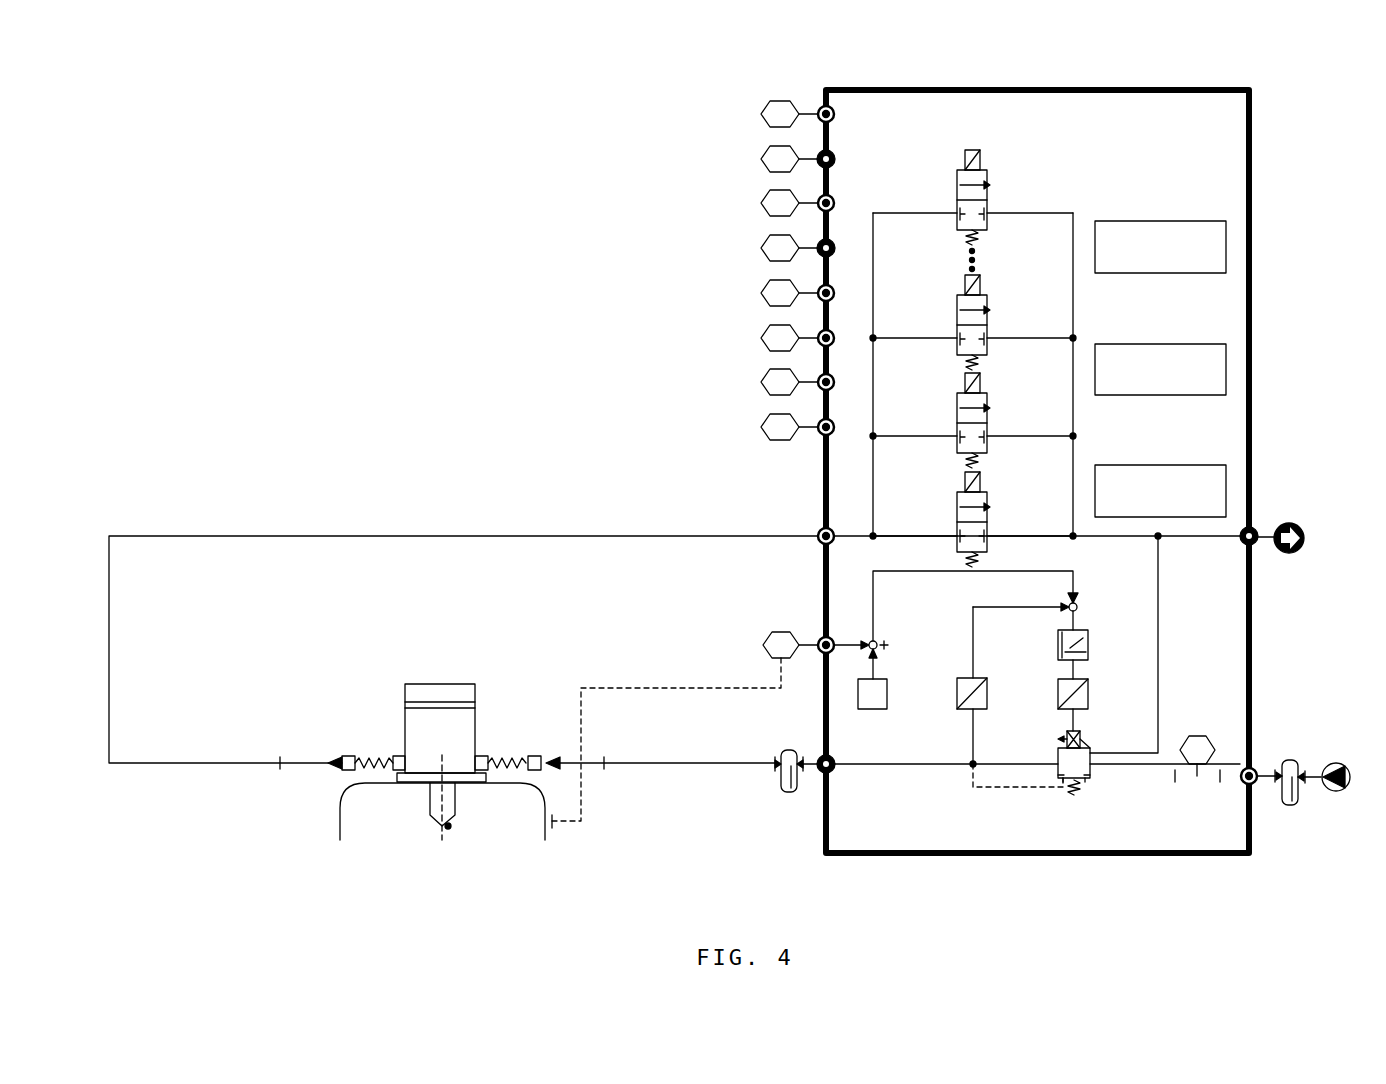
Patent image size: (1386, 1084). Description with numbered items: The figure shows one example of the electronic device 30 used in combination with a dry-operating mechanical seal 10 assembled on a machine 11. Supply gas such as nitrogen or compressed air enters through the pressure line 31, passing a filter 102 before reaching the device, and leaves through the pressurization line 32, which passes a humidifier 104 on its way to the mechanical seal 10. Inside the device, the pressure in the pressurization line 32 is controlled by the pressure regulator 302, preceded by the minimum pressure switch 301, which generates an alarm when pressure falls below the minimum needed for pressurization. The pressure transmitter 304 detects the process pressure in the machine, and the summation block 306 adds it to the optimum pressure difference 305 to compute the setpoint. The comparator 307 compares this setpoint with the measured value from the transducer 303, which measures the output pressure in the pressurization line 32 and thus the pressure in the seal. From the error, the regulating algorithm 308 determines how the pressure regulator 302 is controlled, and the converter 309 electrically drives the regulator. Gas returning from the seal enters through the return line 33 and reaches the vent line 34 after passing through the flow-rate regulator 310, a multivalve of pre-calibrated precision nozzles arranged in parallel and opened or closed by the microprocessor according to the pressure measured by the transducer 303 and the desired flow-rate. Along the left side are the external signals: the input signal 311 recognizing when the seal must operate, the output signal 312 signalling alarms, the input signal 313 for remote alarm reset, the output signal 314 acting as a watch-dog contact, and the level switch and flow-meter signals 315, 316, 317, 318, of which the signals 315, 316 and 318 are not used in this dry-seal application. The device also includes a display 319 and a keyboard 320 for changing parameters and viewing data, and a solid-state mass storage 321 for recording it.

The dry-operating mechanical seal 10 is at (408, 678).
The machine 11 is at (342, 851).
The electronic device 30 is at (828, 866).
The pressure line 31 is at (1305, 759).
The pressurization line 32 is at (604, 775).
The return line 33 is at (110, 771).
The vent line 34 is at (1260, 522).
The filter 102 is at (1305, 759).
The humidifier 104 is at (803, 752).
The minimum pressure switch 301 is at (1220, 729).
The pressure regulator 302 is at (1090, 794).
The transducer 303 is at (991, 672).
The pressure transmitter 304 is at (758, 625).
The optimum pressure difference 305 is at (891, 672).
The summation block 306 is at (891, 623).
The comparator 307 is at (1092, 587).
The regulating algorithm 308 is at (1092, 630).
The converter 309 is at (1092, 674).
The flow-rate regulator 310 is at (873, 146).
The input signal 311 is at (758, 94).
The output signal 312 is at (758, 139).
The input signal 313 is at (758, 183).
The output signal 314 is at (758, 228).
The maximum level switch and flow-meter 315 is at (758, 273).
The minimum level switch and flow-meter 316 is at (758, 318).
The maximum level switch and flow-meter 317 is at (758, 362).
The minimum level switch and flow-meter 318 is at (758, 407).
The display 319 is at (1226, 215).
The keyboard 320 is at (1226, 336).
The mass storage 321 is at (1226, 458).